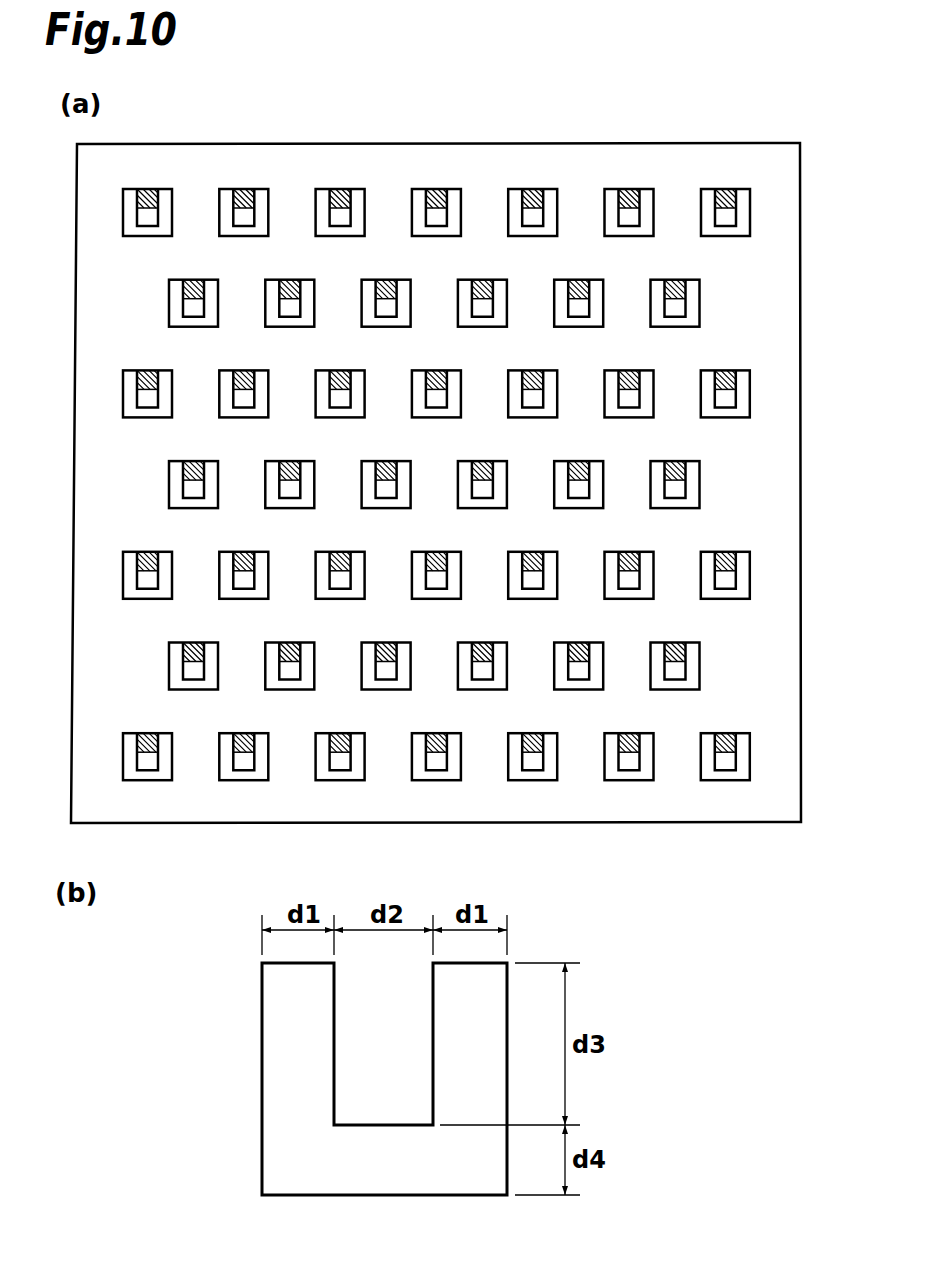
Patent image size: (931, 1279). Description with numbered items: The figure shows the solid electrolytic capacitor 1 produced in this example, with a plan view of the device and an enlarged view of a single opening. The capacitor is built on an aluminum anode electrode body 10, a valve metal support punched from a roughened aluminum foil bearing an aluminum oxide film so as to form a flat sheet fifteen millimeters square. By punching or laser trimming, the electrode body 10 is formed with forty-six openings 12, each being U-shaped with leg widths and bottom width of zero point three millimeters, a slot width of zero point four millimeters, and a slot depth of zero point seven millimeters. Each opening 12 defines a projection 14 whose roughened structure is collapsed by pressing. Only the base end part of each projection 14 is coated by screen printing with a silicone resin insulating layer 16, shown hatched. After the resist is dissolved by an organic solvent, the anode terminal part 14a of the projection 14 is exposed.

The solid electrolytic capacitor 1 is at (708, 132).
The aluminum anode electrode body 10 is at (800, 174).
The opening 12 is at (750, 214).
The projection 14 is at (713, 204).
The anode terminal part 14a is at (728, 218).
The insulating layer 16 is at (727, 193).